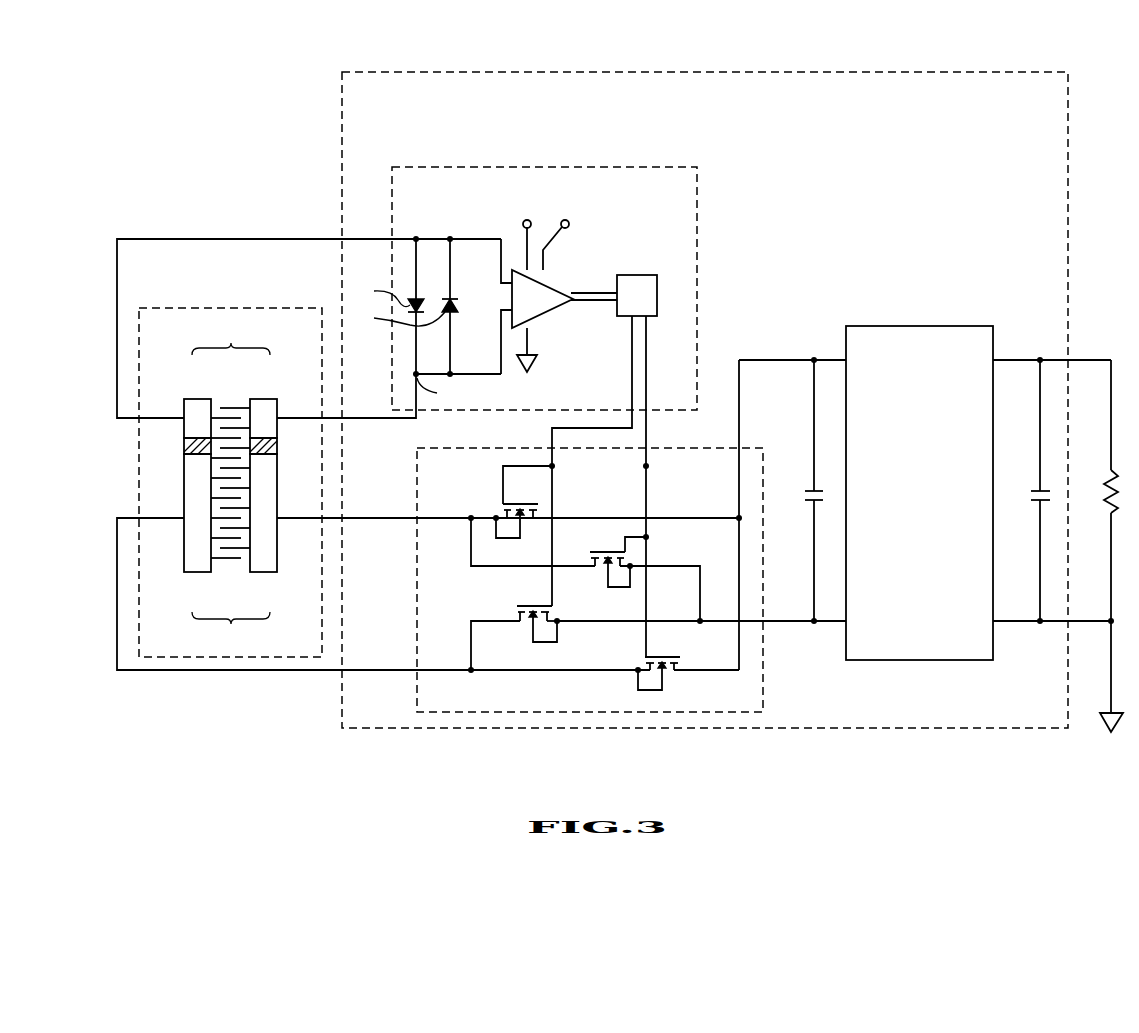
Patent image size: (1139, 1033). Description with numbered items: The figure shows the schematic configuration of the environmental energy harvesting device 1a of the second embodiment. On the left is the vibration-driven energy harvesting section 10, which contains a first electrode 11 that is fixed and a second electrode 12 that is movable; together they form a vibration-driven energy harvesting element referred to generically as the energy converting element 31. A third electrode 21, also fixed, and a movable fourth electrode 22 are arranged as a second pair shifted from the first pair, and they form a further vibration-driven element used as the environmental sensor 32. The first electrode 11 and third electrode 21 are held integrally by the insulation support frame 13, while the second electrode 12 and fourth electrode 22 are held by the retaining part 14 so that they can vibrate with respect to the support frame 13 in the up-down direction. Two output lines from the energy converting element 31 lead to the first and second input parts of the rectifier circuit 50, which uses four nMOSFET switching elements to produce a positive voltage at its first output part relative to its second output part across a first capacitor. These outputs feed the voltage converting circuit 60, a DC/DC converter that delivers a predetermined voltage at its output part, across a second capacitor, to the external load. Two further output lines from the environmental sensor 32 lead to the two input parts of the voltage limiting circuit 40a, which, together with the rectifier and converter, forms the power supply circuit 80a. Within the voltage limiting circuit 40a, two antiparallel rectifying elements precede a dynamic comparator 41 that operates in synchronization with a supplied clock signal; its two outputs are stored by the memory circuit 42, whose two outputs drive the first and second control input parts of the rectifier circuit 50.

The environmental energy harvesting device 1a is at (229, 81).
The vibration-driven energy harvesting section 10 is at (201, 308).
The first electrode 11 is at (261, 572).
The second electrode 12 is at (200, 572).
The insulation support frame 13 is at (277, 445).
The retaining part 14 is at (184, 445).
The third electrode 21 is at (263, 399).
The fourth electrode 22 is at (198, 399).
The energy converting element 31 is at (231, 631).
The environmental sensor 32 is at (231, 337).
The voltage limiting circuit 40a is at (641, 167).
The dynamic comparator 41 is at (513, 265).
The memory circuit 42 is at (657, 296).
The rectifier circuit 50 is at (763, 677).
The voltage converting circuit 60 is at (890, 326).
The power supply circuit 80a is at (342, 158).